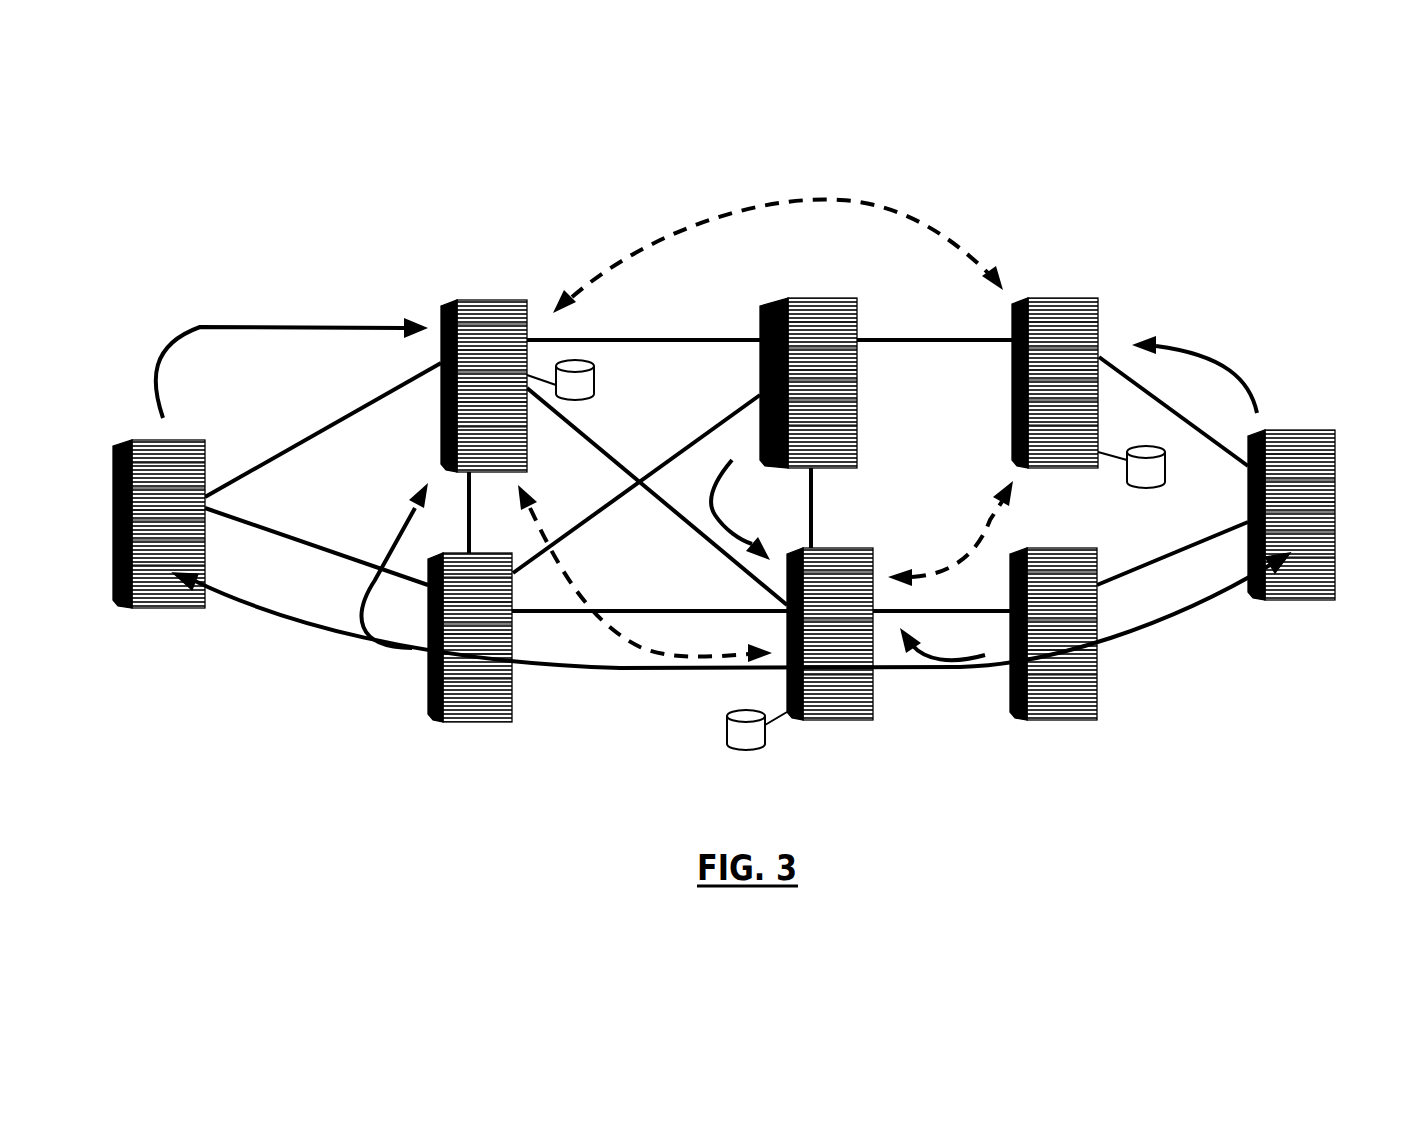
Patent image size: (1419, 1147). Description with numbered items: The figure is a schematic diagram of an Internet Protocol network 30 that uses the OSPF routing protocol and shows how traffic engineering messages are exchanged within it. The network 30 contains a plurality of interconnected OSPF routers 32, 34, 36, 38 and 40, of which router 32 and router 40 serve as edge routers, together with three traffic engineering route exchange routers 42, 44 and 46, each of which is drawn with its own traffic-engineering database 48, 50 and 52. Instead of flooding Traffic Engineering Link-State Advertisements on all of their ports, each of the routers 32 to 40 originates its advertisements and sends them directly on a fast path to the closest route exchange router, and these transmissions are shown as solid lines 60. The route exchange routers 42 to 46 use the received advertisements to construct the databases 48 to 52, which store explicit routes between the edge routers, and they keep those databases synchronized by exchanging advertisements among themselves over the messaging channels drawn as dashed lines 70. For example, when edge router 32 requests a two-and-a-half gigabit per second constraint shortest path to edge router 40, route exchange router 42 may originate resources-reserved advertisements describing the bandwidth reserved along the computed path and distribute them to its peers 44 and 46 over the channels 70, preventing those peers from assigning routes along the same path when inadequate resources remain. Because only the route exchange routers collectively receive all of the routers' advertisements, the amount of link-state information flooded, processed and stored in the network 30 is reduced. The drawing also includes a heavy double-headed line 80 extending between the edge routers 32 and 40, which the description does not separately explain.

The Internet Protocol network 30 is at (1262, 330).
The router 32 is at (190, 445).
The router 34 is at (515, 690).
The router 36 is at (845, 310).
The router 38 is at (1098, 664).
The router 40 is at (1323, 447).
The traffic engineering route exchange router 42 is at (520, 312).
The traffic engineering route exchange router 44 is at (875, 708).
The traffic engineering route exchange router 46 is at (1083, 327).
The traffic-engineering database 48 is at (598, 380).
The traffic-engineering database 50 is at (747, 750).
The traffic-engineering database 52 is at (1163, 482).
The solid lines 60 is at (275, 322).
The dashed lines 70 is at (957, 224).
The end-to-end path 80 is at (345, 642).